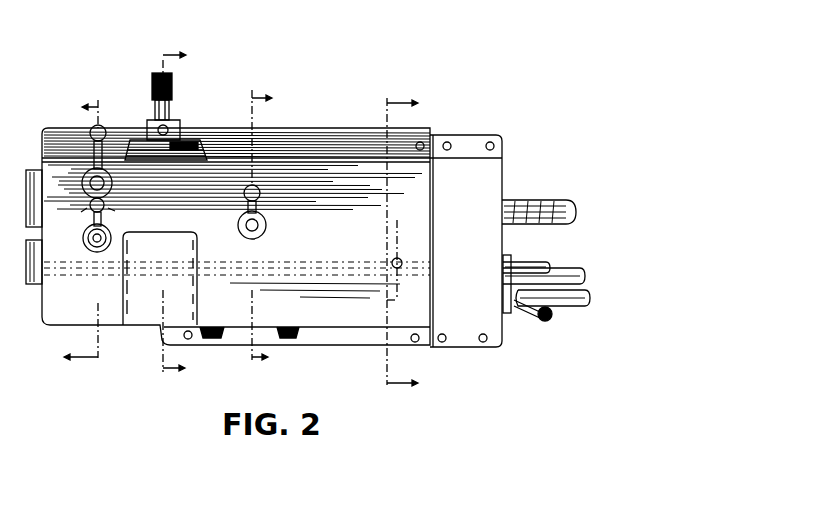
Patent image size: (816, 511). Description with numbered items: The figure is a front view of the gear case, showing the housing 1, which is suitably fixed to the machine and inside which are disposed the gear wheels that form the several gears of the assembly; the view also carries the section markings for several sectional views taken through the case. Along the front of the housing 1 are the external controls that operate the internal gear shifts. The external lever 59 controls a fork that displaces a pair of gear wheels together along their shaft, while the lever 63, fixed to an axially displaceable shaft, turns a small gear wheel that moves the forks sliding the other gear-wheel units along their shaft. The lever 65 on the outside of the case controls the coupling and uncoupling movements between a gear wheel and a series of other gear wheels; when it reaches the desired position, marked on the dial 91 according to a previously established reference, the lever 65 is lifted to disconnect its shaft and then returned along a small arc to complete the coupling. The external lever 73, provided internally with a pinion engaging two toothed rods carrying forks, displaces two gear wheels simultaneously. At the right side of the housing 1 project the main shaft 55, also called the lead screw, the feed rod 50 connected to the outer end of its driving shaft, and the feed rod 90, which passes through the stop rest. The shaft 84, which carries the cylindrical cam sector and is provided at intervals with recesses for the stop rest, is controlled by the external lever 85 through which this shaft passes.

The housing 1 is at (345, 158).
The external lever 59 is at (104, 127).
The lever 63 is at (108, 218).
The lever 65 is at (174, 80).
The dial 91 is at (186, 140).
The external lever 73 is at (262, 188).
The main shaft 55 is at (545, 200).
The feed rod 90 is at (521, 262).
The feed rod 50 is at (566, 268).
The shaft 84 is at (571, 306).
The external lever 85 is at (542, 320).